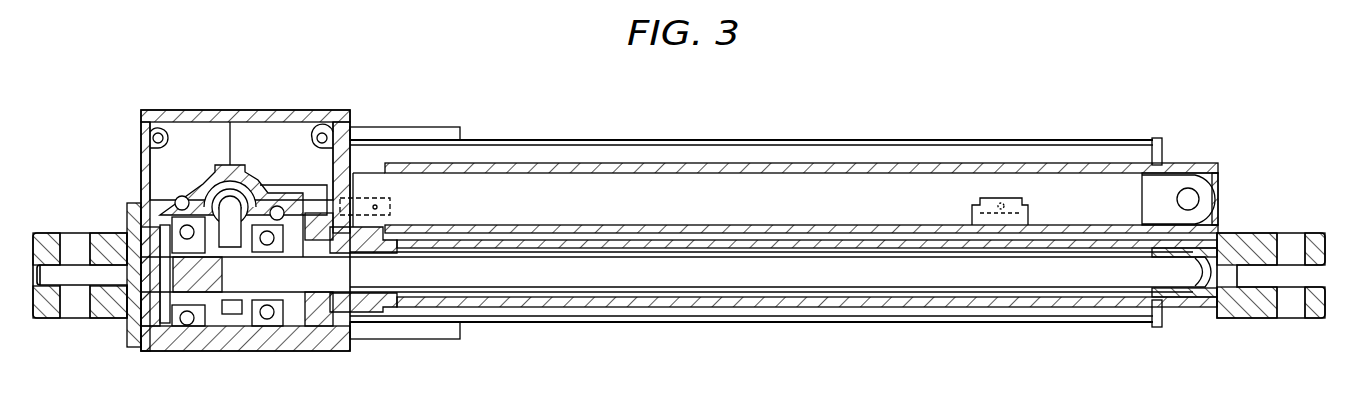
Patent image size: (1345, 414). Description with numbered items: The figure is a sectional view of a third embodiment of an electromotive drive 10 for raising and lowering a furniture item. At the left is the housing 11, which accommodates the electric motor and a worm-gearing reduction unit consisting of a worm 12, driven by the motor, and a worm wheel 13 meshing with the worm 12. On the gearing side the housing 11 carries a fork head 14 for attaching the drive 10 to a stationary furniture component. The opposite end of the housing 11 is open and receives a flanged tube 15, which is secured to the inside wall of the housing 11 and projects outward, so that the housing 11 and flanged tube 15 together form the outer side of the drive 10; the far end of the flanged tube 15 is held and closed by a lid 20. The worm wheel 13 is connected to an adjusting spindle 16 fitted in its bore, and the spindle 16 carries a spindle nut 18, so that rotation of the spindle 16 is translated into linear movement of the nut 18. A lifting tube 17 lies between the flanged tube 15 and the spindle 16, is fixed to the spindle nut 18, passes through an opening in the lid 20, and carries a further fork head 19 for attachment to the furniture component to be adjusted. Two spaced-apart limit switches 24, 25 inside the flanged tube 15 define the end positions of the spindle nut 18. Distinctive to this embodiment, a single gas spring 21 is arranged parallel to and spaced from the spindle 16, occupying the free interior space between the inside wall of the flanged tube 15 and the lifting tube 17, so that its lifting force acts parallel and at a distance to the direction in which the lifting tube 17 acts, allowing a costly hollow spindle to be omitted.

The electromotive drive 10 is at (745, 100).
The housing 11 is at (262, 114).
The worm 12 is at (228, 205).
The worm wheel 13 is at (213, 318).
The fork head 14 is at (101, 236).
The flanged tube 15 is at (562, 139).
The adjusting spindle 16 is at (520, 270).
The lifting tube 17 is at (839, 308).
The spindle nut 18 is at (364, 308).
The fork head 19 is at (1248, 236).
The lid 20 is at (1162, 148).
The gas spring 21 is at (862, 190).
The limit switch 24 is at (366, 198).
The limit switch 25 is at (997, 200).